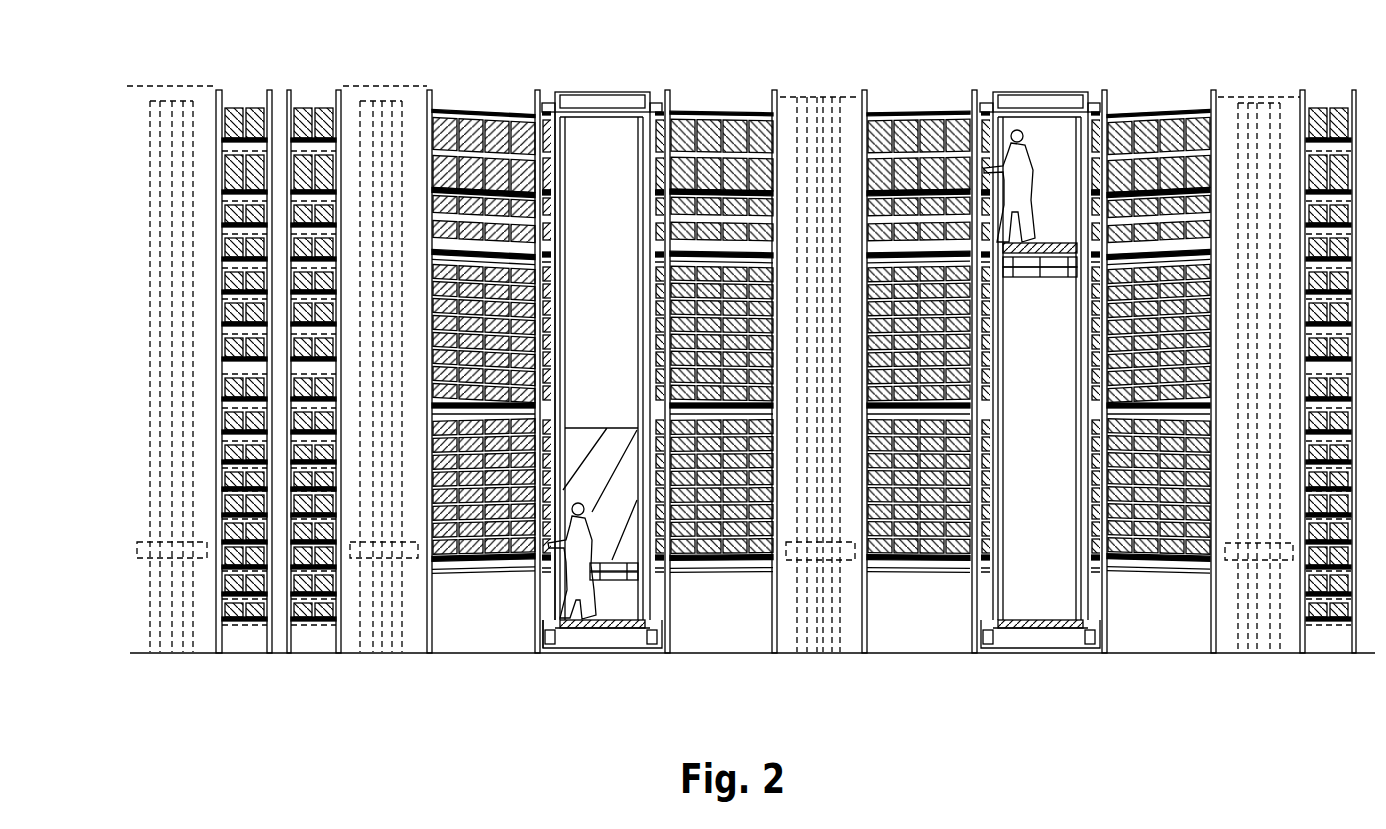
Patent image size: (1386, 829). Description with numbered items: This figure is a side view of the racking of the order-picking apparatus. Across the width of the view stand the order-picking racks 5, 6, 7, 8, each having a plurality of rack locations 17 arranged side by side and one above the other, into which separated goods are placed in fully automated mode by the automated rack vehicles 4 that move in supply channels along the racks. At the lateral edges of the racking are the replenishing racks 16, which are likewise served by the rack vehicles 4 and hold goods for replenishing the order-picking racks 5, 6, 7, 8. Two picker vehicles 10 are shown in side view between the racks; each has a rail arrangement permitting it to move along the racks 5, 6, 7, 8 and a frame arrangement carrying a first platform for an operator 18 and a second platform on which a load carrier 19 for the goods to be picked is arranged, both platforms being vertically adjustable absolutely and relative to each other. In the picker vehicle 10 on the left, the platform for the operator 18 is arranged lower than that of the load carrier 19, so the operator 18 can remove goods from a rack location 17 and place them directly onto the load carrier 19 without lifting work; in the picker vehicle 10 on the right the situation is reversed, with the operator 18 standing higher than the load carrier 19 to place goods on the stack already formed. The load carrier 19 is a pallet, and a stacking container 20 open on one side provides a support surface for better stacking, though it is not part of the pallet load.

The rack vehicle 4 is at (386, 640).
The order-picking rack 5 is at (480, 637).
The order-picking rack 6 is at (725, 622).
The order-picking rack 7 is at (927, 627).
The order-picking rack 8 is at (1172, 630).
The picker vehicle 10 is at (615, 620).
The replenishing rack 16 is at (306, 640).
The rack location 17 is at (555, 277).
The operator 18 is at (565, 586).
The load carrier 19 is at (622, 578).
The stacking container 20 is at (590, 442).